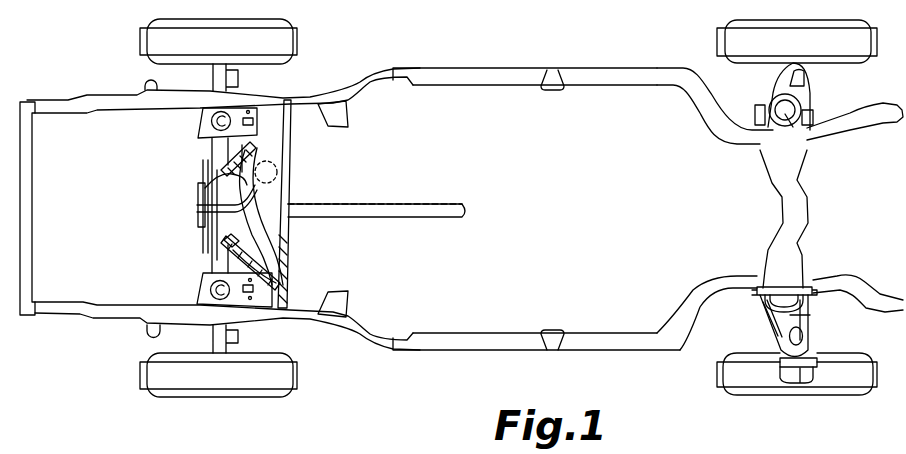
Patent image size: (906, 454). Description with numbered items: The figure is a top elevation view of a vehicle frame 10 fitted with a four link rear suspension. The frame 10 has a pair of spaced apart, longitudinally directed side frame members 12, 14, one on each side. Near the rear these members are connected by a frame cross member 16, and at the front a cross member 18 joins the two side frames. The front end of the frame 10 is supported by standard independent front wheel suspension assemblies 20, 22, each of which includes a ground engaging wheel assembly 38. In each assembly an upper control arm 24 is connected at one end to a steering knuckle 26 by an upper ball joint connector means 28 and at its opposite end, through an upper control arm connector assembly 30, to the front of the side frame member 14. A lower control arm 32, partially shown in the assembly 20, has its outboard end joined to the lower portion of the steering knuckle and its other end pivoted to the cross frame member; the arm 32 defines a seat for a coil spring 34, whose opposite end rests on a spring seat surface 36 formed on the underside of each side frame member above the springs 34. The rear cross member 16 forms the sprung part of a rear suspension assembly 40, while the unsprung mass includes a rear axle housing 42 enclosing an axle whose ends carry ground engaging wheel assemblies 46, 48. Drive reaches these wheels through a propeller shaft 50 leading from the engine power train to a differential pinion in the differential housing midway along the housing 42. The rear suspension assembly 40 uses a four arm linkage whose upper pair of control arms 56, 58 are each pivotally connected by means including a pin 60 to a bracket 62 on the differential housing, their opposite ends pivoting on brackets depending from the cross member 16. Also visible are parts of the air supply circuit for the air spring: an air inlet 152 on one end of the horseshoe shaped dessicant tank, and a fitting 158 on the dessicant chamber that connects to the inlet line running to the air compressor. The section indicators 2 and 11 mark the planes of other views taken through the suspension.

The vehicle frame 10 is at (497, 62).
The side frame member 12 is at (615, 78).
The side frame member 14 is at (476, 338).
The frame cross member 16 is at (288, 155).
The cross member 18 is at (775, 177).
The independent front wheel suspension assembly 20 is at (820, 77).
The independent front wheel suspension assembly 22 is at (818, 336).
The upper control arm 24 is at (766, 306).
The steering knuckle 26 is at (798, 374).
The upper ball joint connector means 28 is at (789, 338).
The upper control arm connector assembly 30 is at (793, 290).
The lower control arm 32 is at (804, 107).
The coil spring 34 is at (793, 124).
The spring seat surface 36 is at (797, 314).
The ground engaging wheel assembly 38 is at (719, 42).
The rear suspension assembly 40 is at (294, 184).
The rear axle housing 42 is at (218, 146).
The ground engaging wheel assembly 46 is at (298, 44).
The ground engaging wheel assembly 48 is at (216, 398).
The propeller shaft 50 is at (397, 207).
The upper control arm 56 is at (252, 148).
The upper control arm 58 is at (281, 283).
The pin 60 is at (278, 260).
The bracket 62 is at (226, 245).
The air inlet 152 is at (199, 184).
The fitting 158 is at (202, 213).
The section line 2- 2 is at (163, 257).
The section line 11- 11 is at (256, 134).